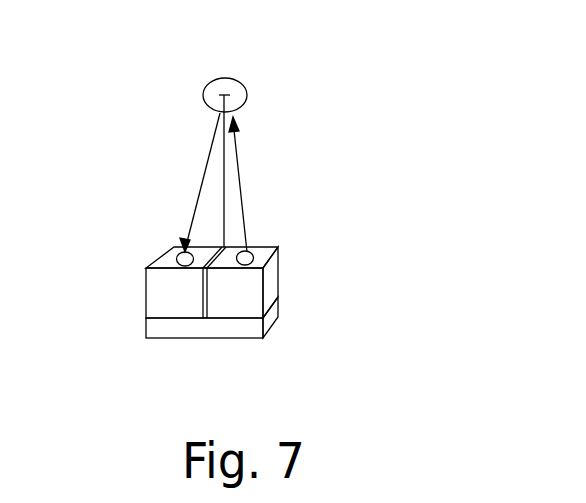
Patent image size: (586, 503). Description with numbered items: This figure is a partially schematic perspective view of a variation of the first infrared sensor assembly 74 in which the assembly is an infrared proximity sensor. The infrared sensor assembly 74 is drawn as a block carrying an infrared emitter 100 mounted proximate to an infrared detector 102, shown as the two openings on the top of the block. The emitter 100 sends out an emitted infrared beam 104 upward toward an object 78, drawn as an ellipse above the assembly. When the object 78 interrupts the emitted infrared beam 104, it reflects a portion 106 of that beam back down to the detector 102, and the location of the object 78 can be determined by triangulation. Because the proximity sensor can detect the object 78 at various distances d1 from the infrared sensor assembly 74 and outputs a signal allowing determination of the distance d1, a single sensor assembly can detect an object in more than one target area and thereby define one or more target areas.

The first infrared sensor assembly 74 is at (372, 242).
The object 78 is at (243, 82).
The infrared emitter 100 is at (269, 249).
The infrared detector 102 is at (167, 263).
The emitted infrared beam 104 is at (237, 158).
The reflected portion of emitted infrared beam 106 is at (207, 162).
The distance d1 is at (223, 160).